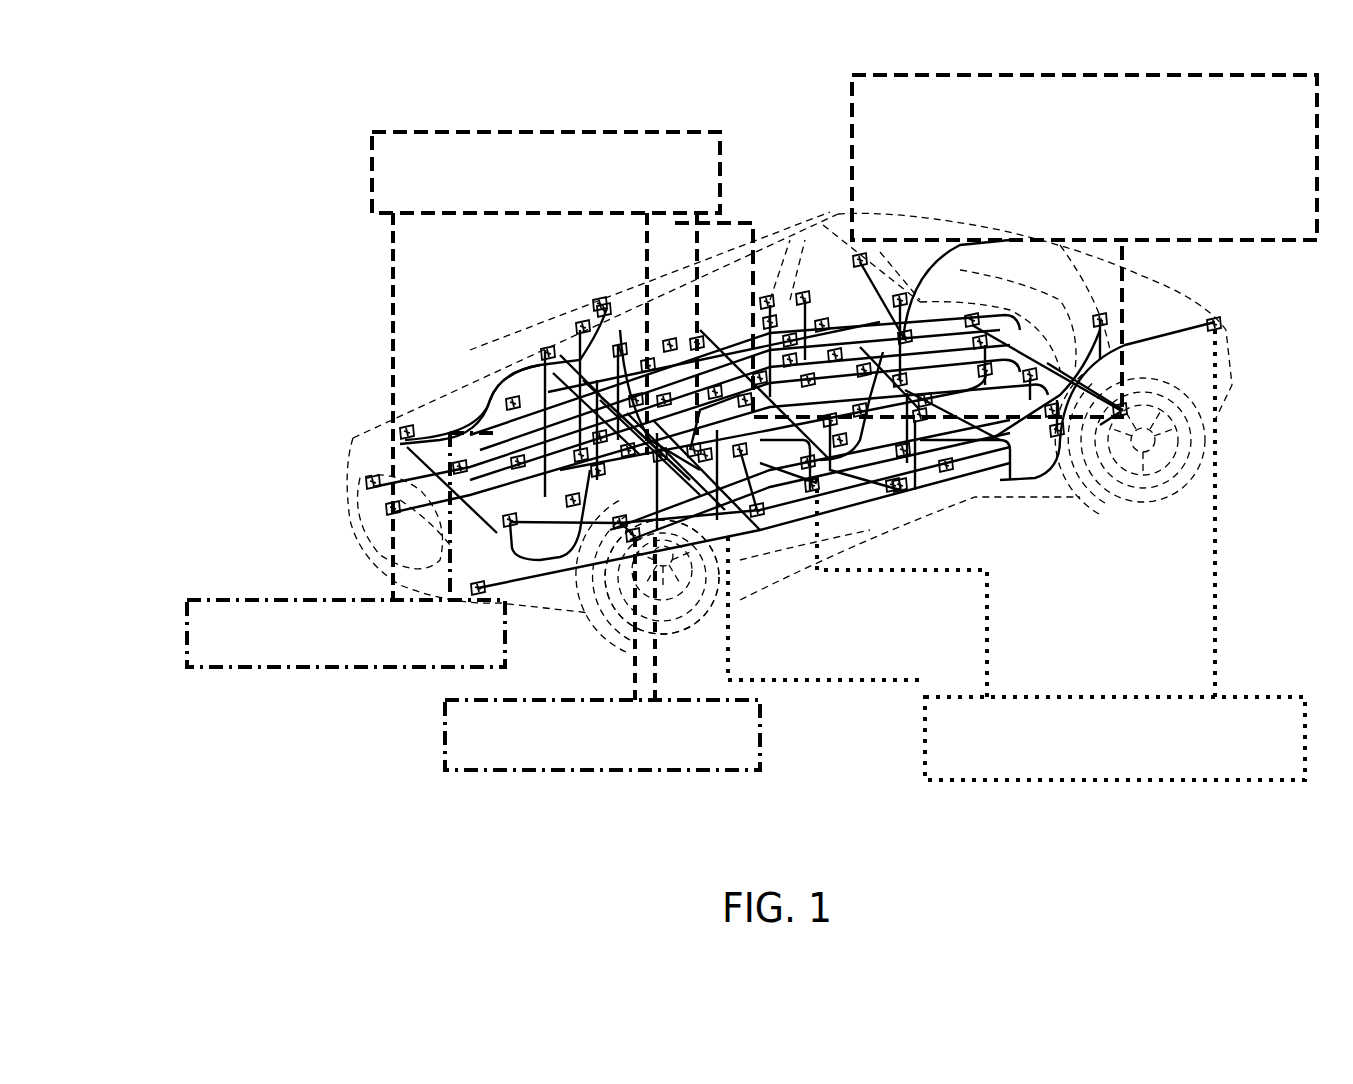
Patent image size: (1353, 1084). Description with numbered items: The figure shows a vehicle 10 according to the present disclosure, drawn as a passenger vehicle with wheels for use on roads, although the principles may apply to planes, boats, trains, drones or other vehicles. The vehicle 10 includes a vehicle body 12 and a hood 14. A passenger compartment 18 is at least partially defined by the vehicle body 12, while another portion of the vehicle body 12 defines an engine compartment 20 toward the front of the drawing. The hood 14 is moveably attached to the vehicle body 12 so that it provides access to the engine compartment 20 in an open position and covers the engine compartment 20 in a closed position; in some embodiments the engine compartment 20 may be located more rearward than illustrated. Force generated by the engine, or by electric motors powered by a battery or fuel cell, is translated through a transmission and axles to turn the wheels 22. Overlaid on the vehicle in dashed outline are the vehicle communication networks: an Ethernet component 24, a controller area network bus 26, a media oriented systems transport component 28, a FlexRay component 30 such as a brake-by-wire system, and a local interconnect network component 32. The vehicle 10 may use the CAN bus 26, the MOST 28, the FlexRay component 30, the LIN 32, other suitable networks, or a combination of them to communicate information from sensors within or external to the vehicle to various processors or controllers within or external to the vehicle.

The vehicle 10 is at (160, 225).
The vehicle body 12 is at (765, 352).
The hood 14 is at (487, 367).
The passenger compartment 18 is at (665, 306).
The engine compartment 20 is at (318, 437).
The wheels 22 is at (610, 592).
The Ethernet component 24 is at (148, 636).
The controller area network (CAN) bus 26 is at (340, 167).
The media oriented systems transport component (MOST) 28 is at (835, 142).
The FlexRay component 30 is at (400, 735).
The local interconnect network component (LIN) 32 is at (893, 735).